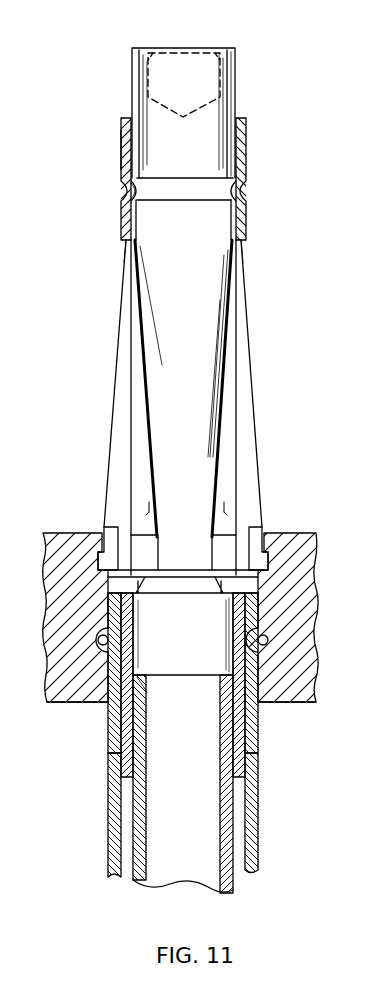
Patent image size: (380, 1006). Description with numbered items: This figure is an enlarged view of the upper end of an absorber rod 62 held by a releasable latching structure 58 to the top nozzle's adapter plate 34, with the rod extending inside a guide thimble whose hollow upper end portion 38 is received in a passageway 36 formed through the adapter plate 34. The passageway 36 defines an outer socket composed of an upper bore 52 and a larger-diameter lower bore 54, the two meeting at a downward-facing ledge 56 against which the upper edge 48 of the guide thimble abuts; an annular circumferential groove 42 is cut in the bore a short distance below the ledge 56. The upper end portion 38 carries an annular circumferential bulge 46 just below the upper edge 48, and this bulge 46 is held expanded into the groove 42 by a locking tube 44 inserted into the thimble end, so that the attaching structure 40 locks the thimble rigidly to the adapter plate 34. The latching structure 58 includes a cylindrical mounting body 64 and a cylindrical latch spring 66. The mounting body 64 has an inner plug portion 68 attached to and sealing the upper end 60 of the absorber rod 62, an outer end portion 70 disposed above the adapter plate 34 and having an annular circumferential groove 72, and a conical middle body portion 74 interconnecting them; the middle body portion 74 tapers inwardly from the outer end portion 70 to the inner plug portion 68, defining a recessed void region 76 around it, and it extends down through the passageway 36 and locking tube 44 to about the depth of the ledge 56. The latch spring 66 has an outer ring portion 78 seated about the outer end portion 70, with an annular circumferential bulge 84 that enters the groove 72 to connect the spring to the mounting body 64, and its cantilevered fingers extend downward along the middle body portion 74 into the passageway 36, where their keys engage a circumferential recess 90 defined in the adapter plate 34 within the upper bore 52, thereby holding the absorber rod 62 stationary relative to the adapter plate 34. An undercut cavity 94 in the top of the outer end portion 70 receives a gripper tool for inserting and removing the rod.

The adapter plate 34 is at (56, 558).
The passageway 36 is at (104, 707).
The upper end portion 38 is at (108, 820).
The attaching structure 40 is at (268, 652).
The annular circumferential groove 42 is at (270, 640).
The locking tube 44 is at (122, 758).
The annular circumferential bulge 46 is at (100, 642).
The upper edge 48 is at (250, 592).
The upper bore 52 is at (216, 572).
The lower bore 54 is at (252, 750).
The ledge 56 is at (140, 616).
The releasable latching structure 58 is at (203, 407).
The upper end 60 is at (142, 693).
The absorber rod 62 is at (133, 857).
The mounting body 64 is at (222, 372).
The latch spring 66 is at (246, 153).
The inner plug portion 68 is at (183, 784).
The outer end portion 70 is at (227, 110).
The annular circumferential groove 72 is at (202, 385).
The middle body portion 74 is at (162, 402).
The recessed void region 76 is at (224, 507).
The outer ring portion 78 is at (121, 148).
The annular circumferential bulge 84 is at (139, 183).
The circumferential recess 90 is at (104, 596).
The undercut cavity 94 is at (171, 108).